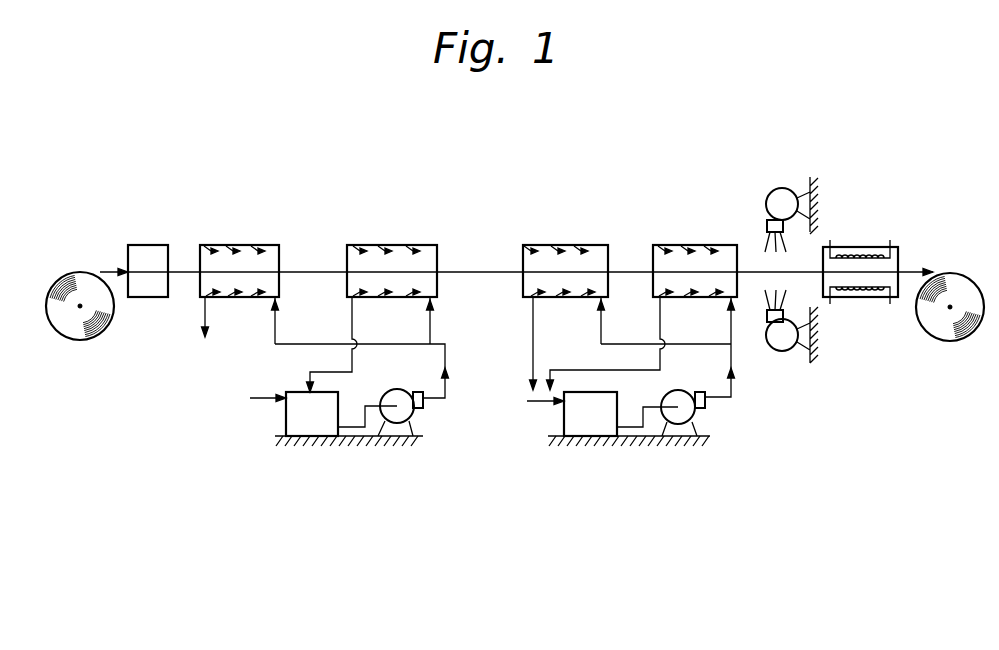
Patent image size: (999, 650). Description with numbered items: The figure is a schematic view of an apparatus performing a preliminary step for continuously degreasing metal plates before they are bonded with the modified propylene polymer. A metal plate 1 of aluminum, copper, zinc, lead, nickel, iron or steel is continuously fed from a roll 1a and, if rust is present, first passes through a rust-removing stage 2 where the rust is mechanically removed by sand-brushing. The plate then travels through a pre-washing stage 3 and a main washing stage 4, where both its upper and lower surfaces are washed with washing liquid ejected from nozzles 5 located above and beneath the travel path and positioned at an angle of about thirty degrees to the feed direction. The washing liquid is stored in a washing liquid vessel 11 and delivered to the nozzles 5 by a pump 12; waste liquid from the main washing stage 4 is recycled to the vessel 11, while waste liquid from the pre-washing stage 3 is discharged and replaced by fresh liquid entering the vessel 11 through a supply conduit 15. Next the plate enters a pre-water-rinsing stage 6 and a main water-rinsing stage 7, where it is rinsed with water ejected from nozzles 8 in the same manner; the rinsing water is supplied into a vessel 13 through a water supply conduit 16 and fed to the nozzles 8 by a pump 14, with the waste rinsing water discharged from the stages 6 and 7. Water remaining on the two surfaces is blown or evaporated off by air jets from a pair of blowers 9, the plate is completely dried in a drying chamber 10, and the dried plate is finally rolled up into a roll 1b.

The metal plate 1 is at (107, 270).
The roll 1a is at (92, 340).
The roll 1b is at (952, 343).
The rust-removing stage 2 is at (153, 245).
The pre-washing stage 3 is at (226, 240).
The main washing stage 4 is at (355, 240).
The nozzles 5 is at (267, 245).
The pre-water-rinsing stage 6 is at (532, 240).
The main water-rinsing stage 7 is at (662, 239).
The nozzles 8 is at (592, 245).
The blowers 9 is at (782, 188).
The drying chamber 10 is at (863, 302).
The washing liquid vessel 11 is at (310, 427).
The pump 12 is at (397, 427).
The vessel 13 is at (588, 427).
The pump 14 is at (680, 427).
The supply conduit 15 is at (252, 402).
The water supply conduit 16 is at (529, 404).